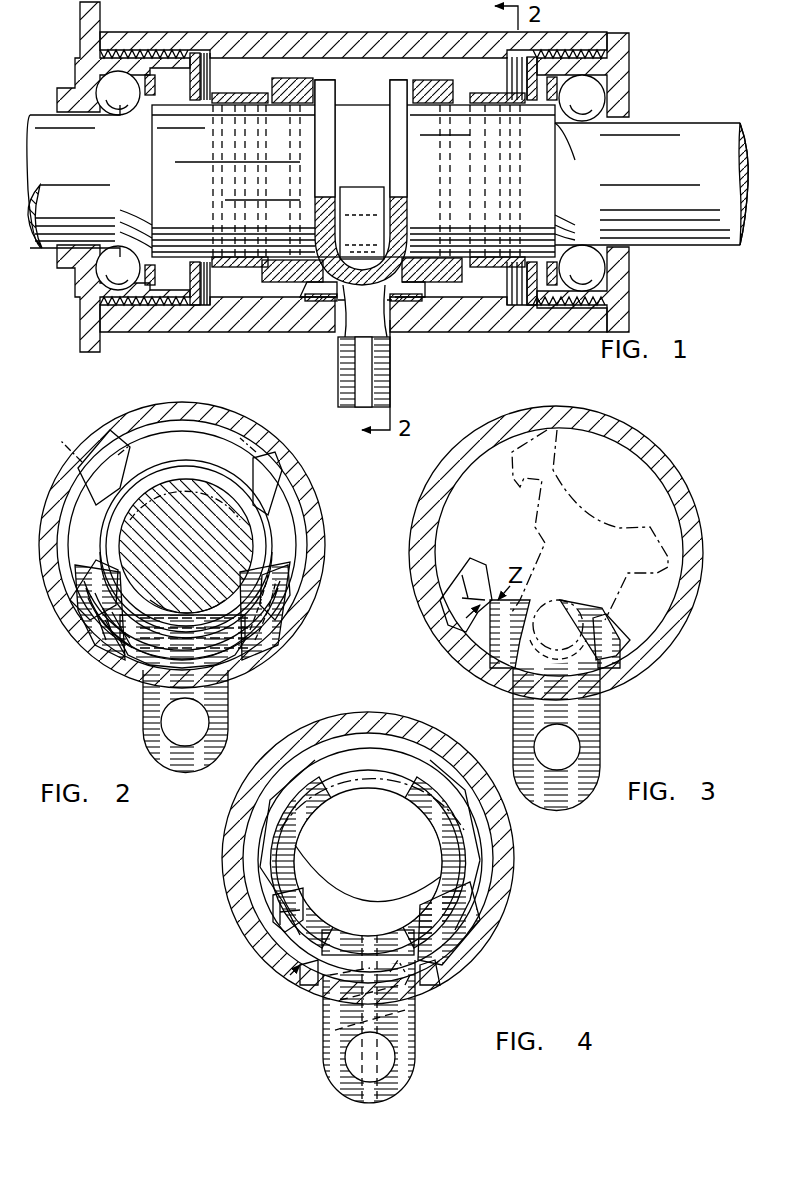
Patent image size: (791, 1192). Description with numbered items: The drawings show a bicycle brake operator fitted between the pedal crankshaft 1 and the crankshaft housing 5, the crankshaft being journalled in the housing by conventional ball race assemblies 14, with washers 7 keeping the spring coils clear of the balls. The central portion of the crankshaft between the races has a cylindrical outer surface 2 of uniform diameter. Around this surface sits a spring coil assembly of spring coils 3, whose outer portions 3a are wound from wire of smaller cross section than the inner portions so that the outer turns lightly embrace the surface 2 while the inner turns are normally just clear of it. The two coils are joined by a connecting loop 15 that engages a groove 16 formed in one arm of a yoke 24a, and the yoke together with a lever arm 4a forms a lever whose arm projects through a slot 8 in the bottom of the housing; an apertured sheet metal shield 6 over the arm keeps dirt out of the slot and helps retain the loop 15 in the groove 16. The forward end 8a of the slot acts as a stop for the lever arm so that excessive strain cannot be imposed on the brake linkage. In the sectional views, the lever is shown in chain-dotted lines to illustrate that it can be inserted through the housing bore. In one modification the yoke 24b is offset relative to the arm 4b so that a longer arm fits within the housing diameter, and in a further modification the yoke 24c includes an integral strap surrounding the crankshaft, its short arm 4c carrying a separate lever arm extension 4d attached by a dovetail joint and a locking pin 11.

In FIG. 1, the pedal crankshaft 1 is at (688, 224).
In FIG. 2, the pedal crankshaft 1 is at (190, 496).
In FIG. 4, the pedal crankshaft 1 is at (368, 862).
In FIG. 1, the cylindrical outer surface 2 is at (350, 105).
In FIG. 2, the cylindrical outer surface 2 is at (135, 480).
In FIG. 1, the spring coils 3 is at (292, 78).
In FIG. 2, the spring coils 3 is at (165, 462).
In FIG. 1, the outer portions of the coils 3a is at (240, 93).
In FIG. 1, the lever arm 4a is at (392, 388).
In FIG. 2, the lever arm 4a is at (150, 742).
In FIG. 3, the lever arm 4b is at (600, 738).
In FIG. 4, the lever arm 4c is at (460, 972).
In FIG. 4, the lever arm extension 4d is at (415, 1055).
In FIG. 1, the crankshaft housing 5 is at (373, 34).
In FIG. 2, the crankshaft housing 5 is at (255, 420).
In FIG. 3, the crankshaft housing 5 is at (660, 452).
In FIG. 4, the crankshaft housing 5 is at (377, 714).
In FIG. 1, the sheet metal shield 6 is at (425, 290).
In FIG. 2, the sheet metal shield 6 is at (256, 640).
In FIG. 1, the washers 7 is at (206, 70).
In FIG. 1, the slot 8 is at (338, 353).
In FIG. 2, the slot 8 is at (246, 670).
In FIG. 3, the slot 8 is at (606, 680).
In FIG. 4, the slot 8 is at (432, 985).
In FIG. 2, the forward end of the slot 8a is at (118, 672).
In FIG. 3, the forward end of the slot 8a is at (486, 660).
In FIG. 4, the forward end of the slot 8a is at (306, 985).
In FIG. 4, the locking pin 11 is at (340, 1022).
In FIG. 1, the ball race assemblies 14 is at (640, 80).
In FIG. 1, the connecting loop 15 is at (380, 296).
In FIG. 2, the connecting loop 15 is at (110, 642).
In FIG. 1, the groove 16 is at (346, 294).
In FIG. 2, the groove 16 is at (100, 635).
In FIG. 3, the groove 16 is at (440, 620).
In FIG. 4, the groove 16 is at (270, 916).
In FIG. 1, the yoke 24a is at (370, 200).
In FIG. 2, the yoke 24a is at (280, 487).
In FIG. 3, the yoke 24b is at (640, 525).
In FIG. 4, the yoke 24c is at (455, 940).